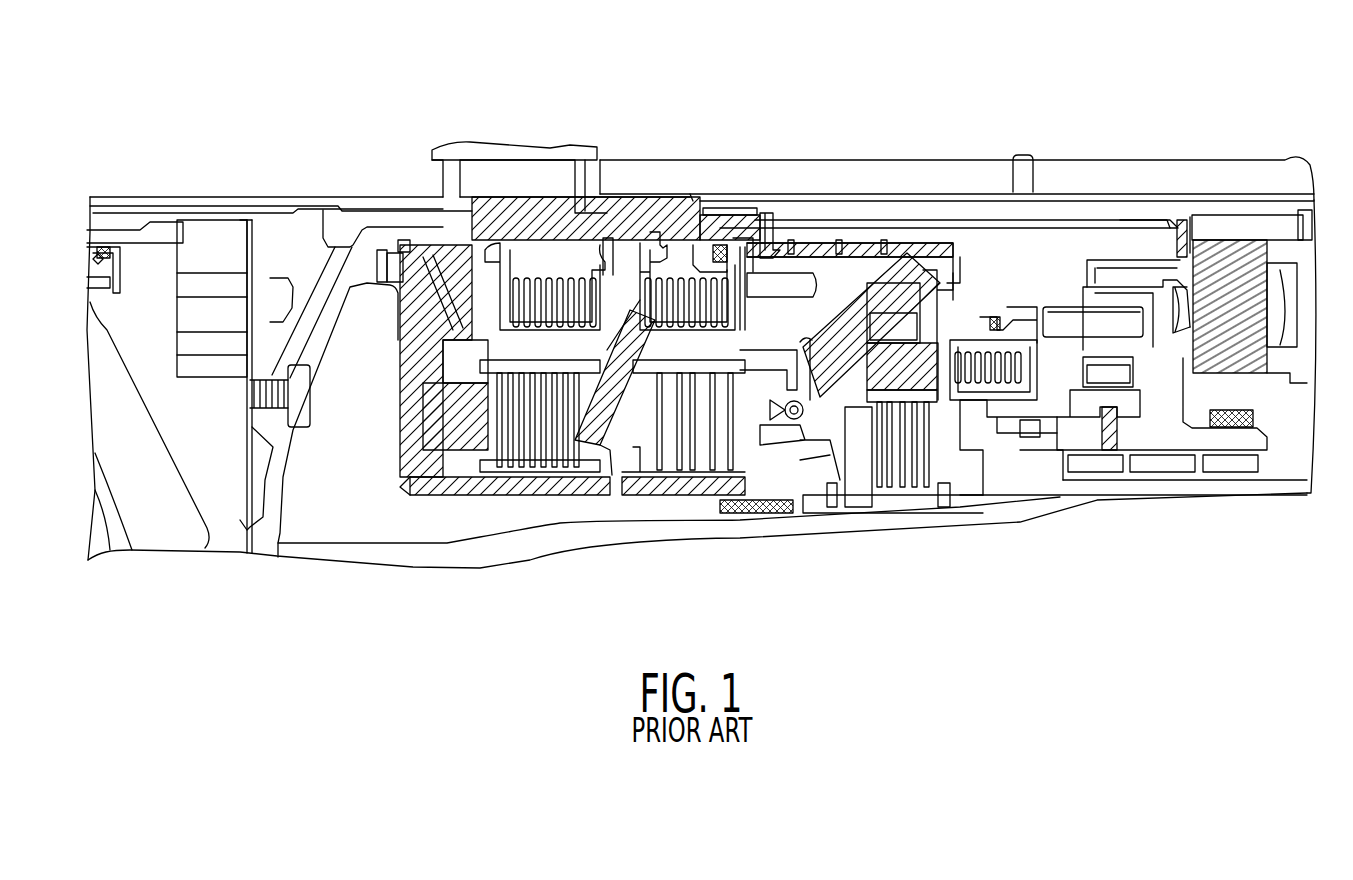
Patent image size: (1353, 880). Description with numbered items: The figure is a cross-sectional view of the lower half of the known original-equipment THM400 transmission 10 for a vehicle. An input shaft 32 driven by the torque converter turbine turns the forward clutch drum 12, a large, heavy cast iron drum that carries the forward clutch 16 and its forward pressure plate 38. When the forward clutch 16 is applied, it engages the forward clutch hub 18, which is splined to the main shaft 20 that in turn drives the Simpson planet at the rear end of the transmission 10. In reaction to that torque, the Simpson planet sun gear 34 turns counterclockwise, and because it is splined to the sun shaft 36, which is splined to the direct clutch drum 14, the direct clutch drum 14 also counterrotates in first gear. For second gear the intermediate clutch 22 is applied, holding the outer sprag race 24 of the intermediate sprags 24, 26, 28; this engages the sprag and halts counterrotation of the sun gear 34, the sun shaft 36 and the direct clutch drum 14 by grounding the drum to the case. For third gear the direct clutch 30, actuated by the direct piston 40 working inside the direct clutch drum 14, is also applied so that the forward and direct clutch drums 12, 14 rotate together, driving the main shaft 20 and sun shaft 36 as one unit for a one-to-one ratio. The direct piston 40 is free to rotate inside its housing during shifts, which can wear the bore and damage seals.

The OE THM400 10 is at (238, 158).
The OE forward clutch drum 12 is at (398, 293).
The OE direct clutch drum 14 is at (832, 352).
The OE forward clutch 16 is at (555, 462).
The OE forward clutch hub 18 is at (613, 287).
The OE main shaft 20 is at (752, 180).
The OE intermediate clutch 22 is at (903, 457).
The OE outer sprag race 24 is at (940, 428).
The OE intermediate sprag 26 is at (907, 327).
The OE intermediate sprag 28 is at (865, 318).
The OE direct clutch 30 is at (707, 470).
The OE input shaft 32 is at (490, 175).
The OE Simpson planet sun gear 34 is at (1207, 227).
The OE sun shaft 36 is at (823, 210).
The OE forward pressure plate 38 is at (622, 375).
The direct piston 40 is at (828, 452).